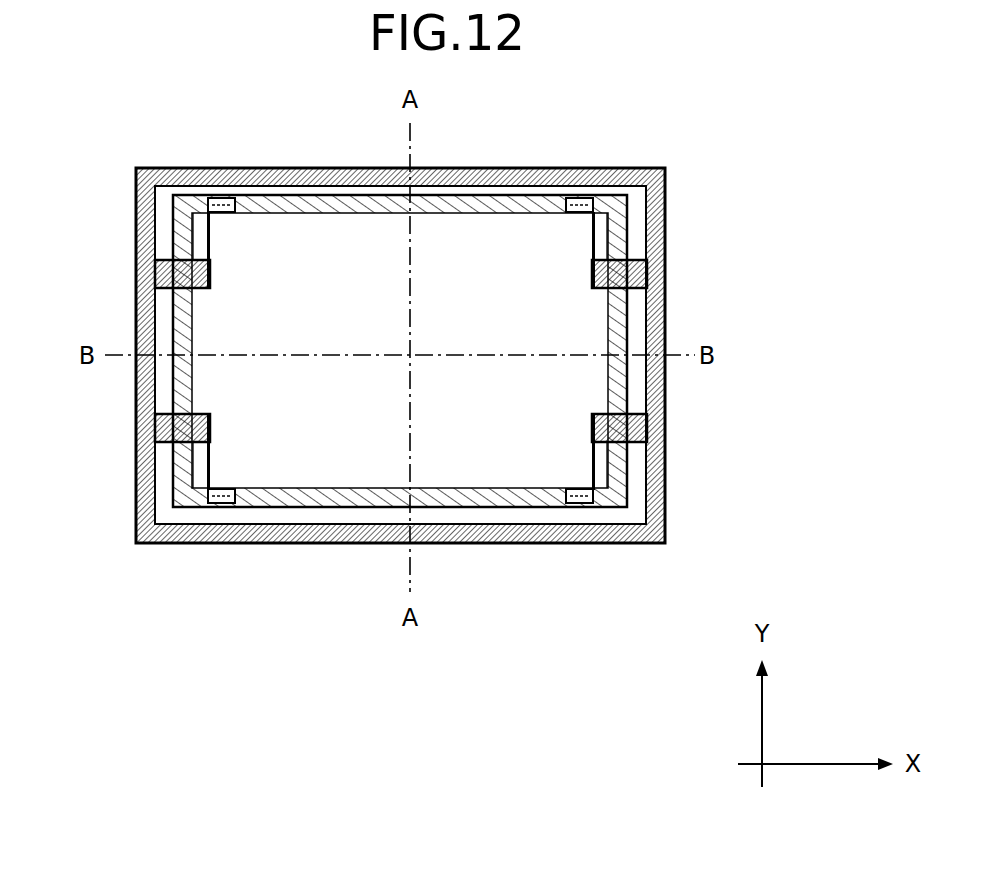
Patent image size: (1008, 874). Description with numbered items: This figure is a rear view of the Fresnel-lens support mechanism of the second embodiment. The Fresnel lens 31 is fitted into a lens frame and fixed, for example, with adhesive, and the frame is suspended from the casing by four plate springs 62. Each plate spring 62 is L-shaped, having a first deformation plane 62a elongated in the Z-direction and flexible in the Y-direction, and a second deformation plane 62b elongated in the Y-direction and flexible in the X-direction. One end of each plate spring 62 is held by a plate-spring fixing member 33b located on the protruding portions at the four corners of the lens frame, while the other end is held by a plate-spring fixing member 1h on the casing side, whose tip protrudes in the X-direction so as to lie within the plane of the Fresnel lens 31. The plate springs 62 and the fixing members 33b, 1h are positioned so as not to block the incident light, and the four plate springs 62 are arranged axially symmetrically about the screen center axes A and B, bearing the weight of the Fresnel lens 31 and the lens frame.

The Fresnel lens 31 is at (480, 228).
The plate-spring fixing member 1h is at (175, 274).
The plate spring 62 is at (224, 234).
The first deformation plane 62a is at (194, 222).
The second deformation plane 62b is at (205, 235).
The plate-spring fixing member 33b is at (224, 198).